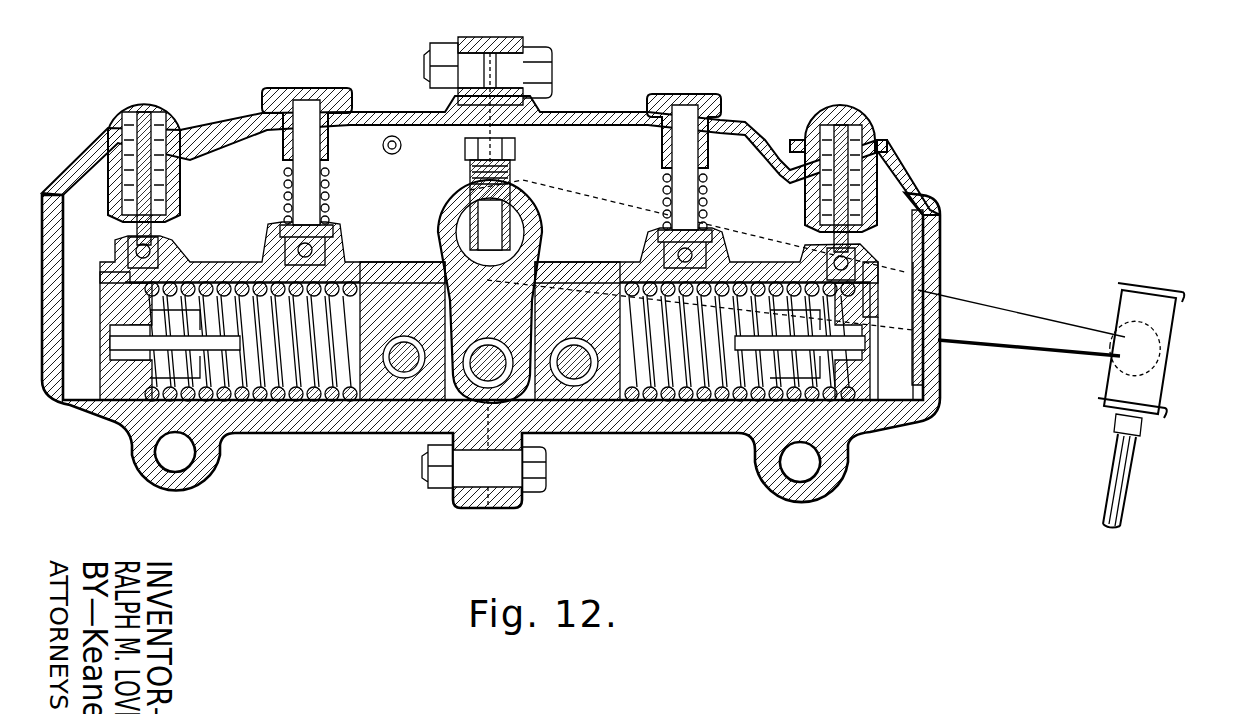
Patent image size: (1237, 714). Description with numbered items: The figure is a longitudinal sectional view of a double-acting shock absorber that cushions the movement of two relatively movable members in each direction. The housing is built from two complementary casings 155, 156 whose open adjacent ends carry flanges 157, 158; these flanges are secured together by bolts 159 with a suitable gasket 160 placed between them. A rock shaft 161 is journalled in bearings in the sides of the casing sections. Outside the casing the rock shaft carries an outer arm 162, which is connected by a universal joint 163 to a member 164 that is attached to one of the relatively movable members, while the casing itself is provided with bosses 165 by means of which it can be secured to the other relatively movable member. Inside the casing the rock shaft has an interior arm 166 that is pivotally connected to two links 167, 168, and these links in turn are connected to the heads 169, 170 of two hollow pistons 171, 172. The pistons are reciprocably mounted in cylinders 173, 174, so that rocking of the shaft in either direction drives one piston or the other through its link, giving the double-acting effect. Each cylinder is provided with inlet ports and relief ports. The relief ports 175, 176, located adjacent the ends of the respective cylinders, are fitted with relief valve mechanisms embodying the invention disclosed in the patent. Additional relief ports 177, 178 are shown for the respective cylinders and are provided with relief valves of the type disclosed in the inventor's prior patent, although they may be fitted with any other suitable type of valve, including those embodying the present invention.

The casing 155 is at (655, 416).
The casing 156 is at (326, 416).
The flange 157 is at (520, 42).
The flange 158 is at (470, 40).
The bolts 159 is at (542, 72).
The gasket 160 is at (492, 50).
The rock shaft 161 is at (530, 198).
The outer arm 162 is at (985, 316).
The universal joint 163 is at (1145, 350).
The member 164 is at (1126, 465).
The bosses 165 is at (136, 473).
The interior arm 166 is at (418, 248).
The link 167 is at (565, 300).
The link 168 is at (402, 300).
The piston head 169 is at (608, 416).
The piston head 170 is at (387, 416).
The hollow piston 171 is at (700, 416).
The hollow piston 172 is at (260, 416).
The cylinder 173 is at (732, 416).
The cylinder 174 is at (232, 436).
The relief port 175 is at (876, 245).
The relief port 176 is at (106, 238).
The additional relief port 177 is at (706, 240).
The additional relief port 178 is at (270, 238).